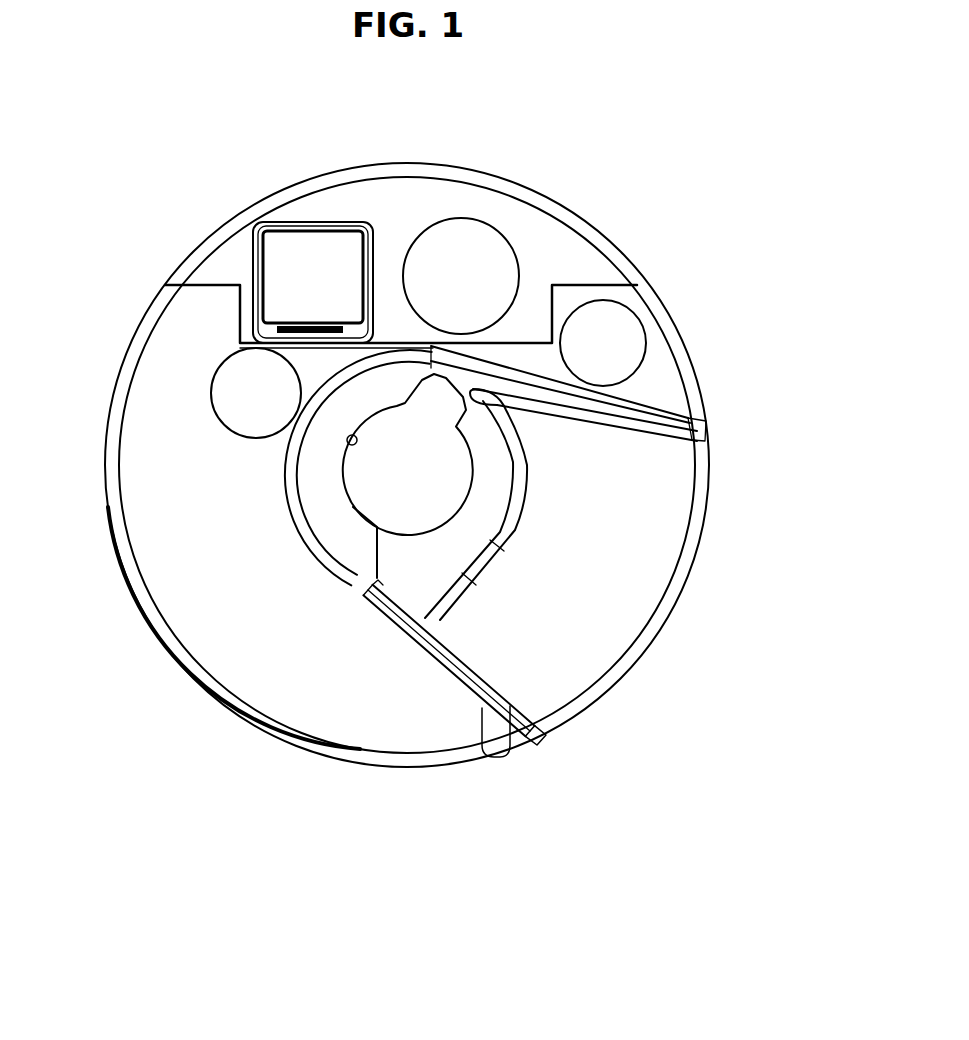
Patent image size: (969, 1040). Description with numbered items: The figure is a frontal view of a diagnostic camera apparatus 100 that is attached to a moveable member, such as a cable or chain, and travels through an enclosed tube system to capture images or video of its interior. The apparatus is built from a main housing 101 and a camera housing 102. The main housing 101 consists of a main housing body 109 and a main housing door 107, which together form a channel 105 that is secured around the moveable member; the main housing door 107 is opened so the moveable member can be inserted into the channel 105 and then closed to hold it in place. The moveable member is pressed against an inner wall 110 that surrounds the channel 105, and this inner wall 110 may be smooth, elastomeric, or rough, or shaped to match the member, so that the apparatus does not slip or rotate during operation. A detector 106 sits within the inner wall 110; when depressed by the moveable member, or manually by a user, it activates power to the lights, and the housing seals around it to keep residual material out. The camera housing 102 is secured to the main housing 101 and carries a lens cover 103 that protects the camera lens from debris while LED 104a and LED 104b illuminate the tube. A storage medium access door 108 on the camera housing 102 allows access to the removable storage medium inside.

The diagnostic camera apparatus 100 is at (686, 219).
The main housing 101 is at (580, 708).
The camera housing 102 is at (376, 200).
The lens cover 103 is at (493, 258).
The LED 104a is at (637, 342).
The LED 104b is at (223, 410).
The channel 105 is at (414, 467).
The detector 106 is at (348, 441).
The main housing door 107 is at (618, 607).
The storage medium access door 108 is at (280, 272).
The main housing body 109 is at (373, 733).
The inner wall 110 is at (440, 517).